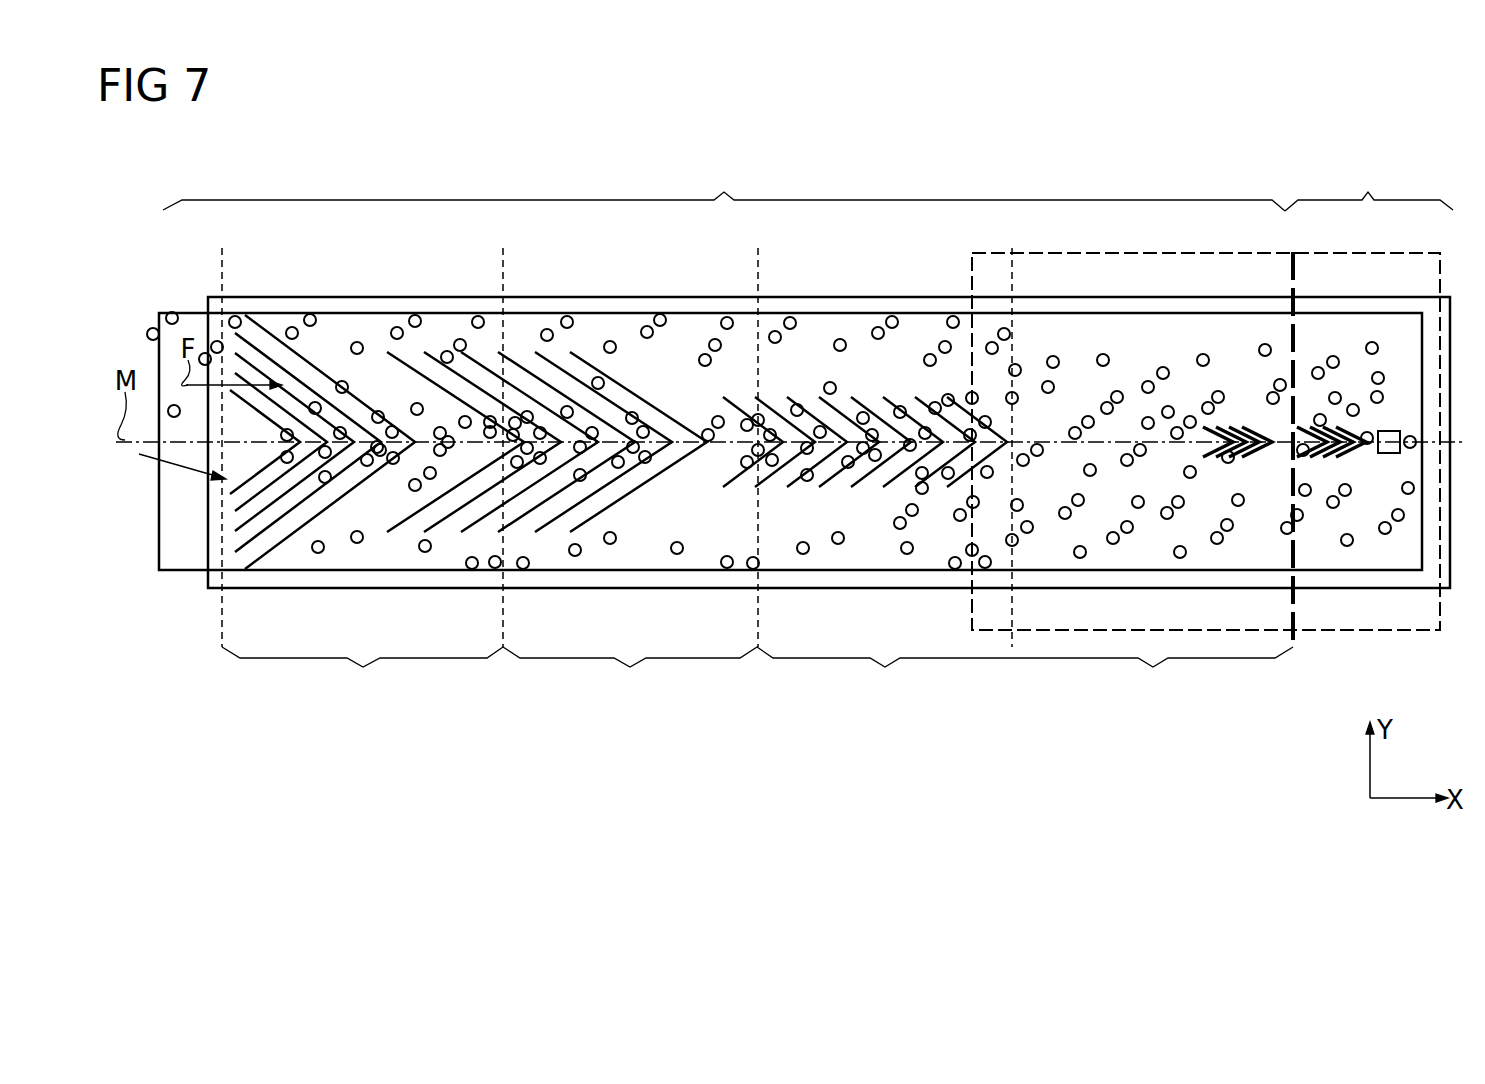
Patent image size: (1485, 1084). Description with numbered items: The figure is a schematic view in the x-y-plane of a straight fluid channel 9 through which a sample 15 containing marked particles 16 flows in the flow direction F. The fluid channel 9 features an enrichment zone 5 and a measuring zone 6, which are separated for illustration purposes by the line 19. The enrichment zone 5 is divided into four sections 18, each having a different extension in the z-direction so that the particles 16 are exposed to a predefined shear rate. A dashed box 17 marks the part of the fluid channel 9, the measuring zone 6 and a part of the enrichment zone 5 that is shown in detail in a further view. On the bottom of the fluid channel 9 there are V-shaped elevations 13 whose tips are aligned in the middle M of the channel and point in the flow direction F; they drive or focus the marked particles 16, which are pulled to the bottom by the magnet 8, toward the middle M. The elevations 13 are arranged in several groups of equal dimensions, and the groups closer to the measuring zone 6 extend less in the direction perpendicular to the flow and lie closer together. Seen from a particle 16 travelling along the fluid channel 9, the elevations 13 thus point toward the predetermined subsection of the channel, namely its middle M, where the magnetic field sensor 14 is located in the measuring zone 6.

The enrichment zone 5 is at (724, 186).
The measuring zone 6 is at (1369, 186).
The magnet 8 is at (933, 305).
The fluid channel 9 is at (682, 298).
The elevations 13 is at (807, 477).
The magnetic field sensor 14 is at (1386, 431).
The sample 15 is at (586, 326).
The marked particles 16 is at (776, 330).
The box 17 is at (1120, 252).
The sections 18 is at (757, 476).
The line 19 is at (1297, 603).